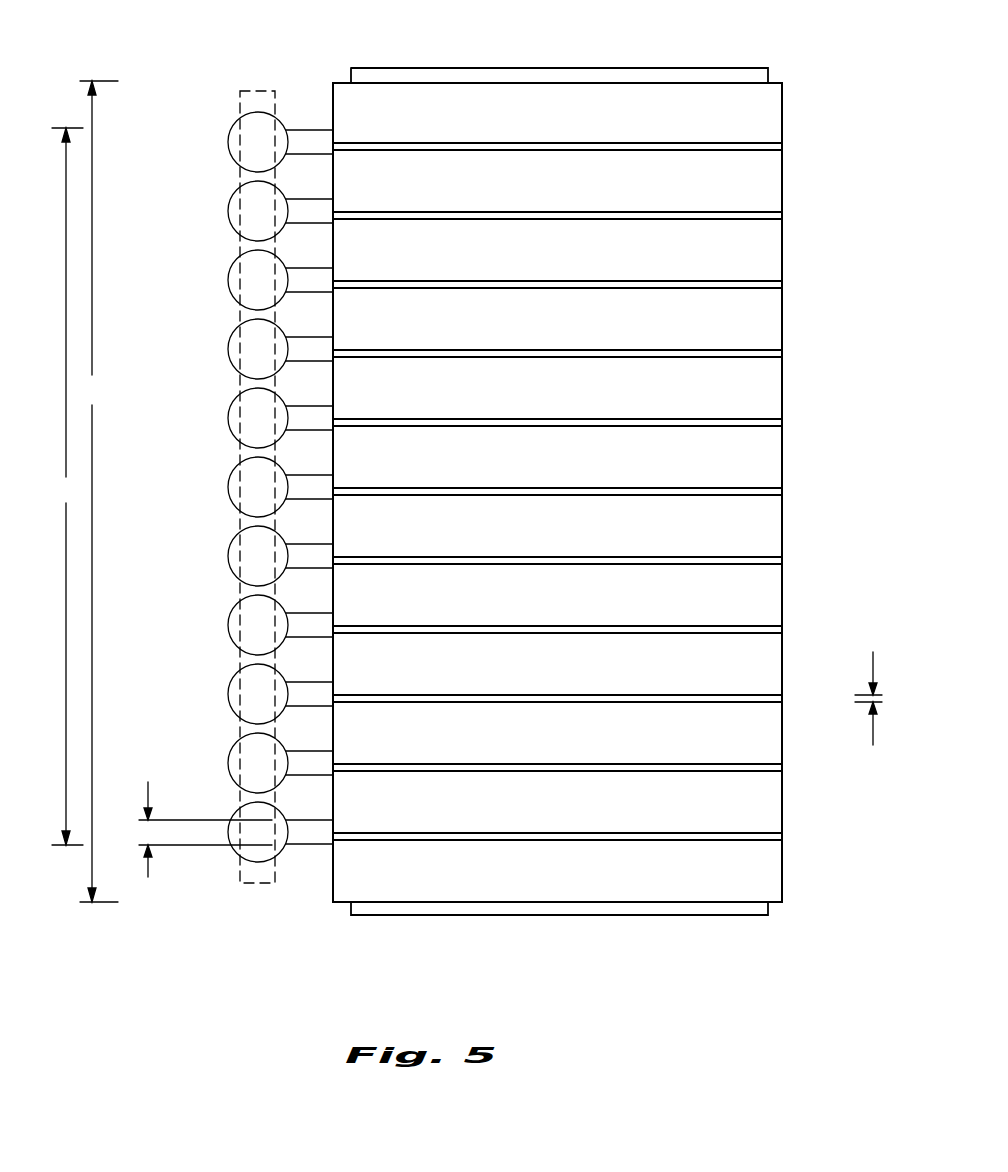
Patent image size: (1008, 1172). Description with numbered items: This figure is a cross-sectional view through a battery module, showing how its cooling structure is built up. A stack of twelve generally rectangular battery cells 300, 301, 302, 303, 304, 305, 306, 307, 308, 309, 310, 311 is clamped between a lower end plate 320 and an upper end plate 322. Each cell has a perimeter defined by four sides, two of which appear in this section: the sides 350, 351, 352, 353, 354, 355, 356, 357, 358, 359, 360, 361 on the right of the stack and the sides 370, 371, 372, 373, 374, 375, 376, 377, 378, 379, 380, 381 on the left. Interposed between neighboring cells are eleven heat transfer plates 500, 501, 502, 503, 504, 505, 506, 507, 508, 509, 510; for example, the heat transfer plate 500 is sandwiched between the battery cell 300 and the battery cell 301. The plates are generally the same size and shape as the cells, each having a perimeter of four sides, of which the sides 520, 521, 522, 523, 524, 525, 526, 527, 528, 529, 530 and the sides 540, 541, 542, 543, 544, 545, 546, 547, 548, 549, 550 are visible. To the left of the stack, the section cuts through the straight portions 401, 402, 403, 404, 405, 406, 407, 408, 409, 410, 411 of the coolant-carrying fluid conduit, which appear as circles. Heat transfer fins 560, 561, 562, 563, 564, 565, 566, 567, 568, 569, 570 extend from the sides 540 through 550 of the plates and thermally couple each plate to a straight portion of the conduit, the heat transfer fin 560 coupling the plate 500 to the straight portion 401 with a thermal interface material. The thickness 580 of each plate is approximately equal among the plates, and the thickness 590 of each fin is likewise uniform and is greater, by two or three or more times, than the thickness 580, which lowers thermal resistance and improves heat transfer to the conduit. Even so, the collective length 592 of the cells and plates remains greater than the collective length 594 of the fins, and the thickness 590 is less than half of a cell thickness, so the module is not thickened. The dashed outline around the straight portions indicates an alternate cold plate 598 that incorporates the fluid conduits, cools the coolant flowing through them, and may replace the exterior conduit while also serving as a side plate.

The battery cell 300 is at (772, 865).
The battery cell 301 is at (772, 796).
The battery cell 302 is at (772, 727).
The battery cell 303 is at (772, 658).
The battery cell 304 is at (772, 589).
The battery cell 305 is at (772, 520).
The battery cell 306 is at (772, 451).
The battery cell 307 is at (772, 382).
The battery cell 308 is at (772, 313).
The battery cell 309 is at (772, 244).
The battery cell 310 is at (772, 175).
The battery cell 311 is at (772, 108).
The end plate 320 is at (438, 915).
The end plate 322 is at (620, 68).
The side of battery cell 350 is at (783, 877).
The side of battery cell 351 is at (783, 808).
The side of battery cell 352 is at (783, 739).
The side of battery cell 353 is at (783, 670).
The side of battery cell 354 is at (783, 601).
The side of battery cell 355 is at (783, 532).
The side of battery cell 356 is at (783, 463).
The side of battery cell 357 is at (783, 394).
The side of battery cell 358 is at (783, 325).
The side of battery cell 359 is at (783, 256).
The side of battery cell 360 is at (783, 187).
The side of battery cell 361 is at (783, 120).
The side of battery cell 370 is at (333, 855).
The side of battery cell 371 is at (333, 786).
The side of battery cell 372 is at (333, 717).
The side of battery cell 373 is at (333, 648).
The side of battery cell 374 is at (333, 579).
The side of battery cell 375 is at (333, 510).
The side of battery cell 376 is at (333, 441).
The side of battery cell 377 is at (333, 372).
The side of battery cell 378 is at (333, 303).
The side of battery cell 379 is at (333, 234).
The side of battery cell 380 is at (333, 165).
The side of battery cell 381 is at (332, 98).
The straight portion of fluid conduit 401 is at (234, 852).
The straight portion of fluid conduit 402 is at (228, 763).
The straight portion of fluid conduit 403 is at (228, 694).
The straight portion of fluid conduit 404 is at (228, 625).
The straight portion of fluid conduit 405 is at (228, 556).
The straight portion of fluid conduit 406 is at (228, 487).
The straight portion of fluid conduit 407 is at (228, 418).
The straight portion of fluid conduit 408 is at (228, 349).
The straight portion of fluid conduit 409 is at (228, 280).
The straight portion of fluid conduit 410 is at (228, 211).
The straight portion of fluid conduit 411 is at (228, 142).
The heat transfer plate 500 is at (502, 830).
The heat transfer plate 501 is at (502, 761).
The heat transfer plate 502 is at (502, 692).
The heat transfer plate 503 is at (502, 623).
The heat transfer plate 504 is at (502, 554).
The heat transfer plate 505 is at (502, 485).
The heat transfer plate 506 is at (502, 416).
The heat transfer plate 507 is at (502, 347).
The heat transfer plate 508 is at (502, 278).
The heat transfer plate 509 is at (502, 209).
The heat transfer plate 510 is at (502, 142).
The side of heat transfer plate 520 is at (783, 838).
The side of heat transfer plate 521 is at (783, 769).
The side of heat transfer plate 522 is at (783, 700).
The side of heat transfer plate 523 is at (783, 631).
The side of heat transfer plate 524 is at (783, 562).
The side of heat transfer plate 525 is at (783, 493).
The side of heat transfer plate 526 is at (783, 424).
The side of heat transfer plate 527 is at (783, 355).
The side of heat transfer plate 528 is at (783, 286).
The side of heat transfer plate 529 is at (783, 217).
The side of heat transfer plate 530 is at (783, 148).
The side of heat transfer plate 540 is at (335, 836).
The side of heat transfer plate 541 is at (335, 767).
The side of heat transfer plate 542 is at (335, 698).
The side of heat transfer plate 543 is at (335, 629).
The side of heat transfer plate 544 is at (335, 560).
The side of heat transfer plate 545 is at (335, 491).
The side of heat transfer plate 546 is at (335, 422).
The side of heat transfer plate 547 is at (335, 353).
The side of heat transfer plate 548 is at (335, 284).
The side of heat transfer plate 549 is at (335, 215).
The side of heat transfer plate 550 is at (335, 146).
The heat transfer fin 560 is at (318, 828).
The heat transfer fin 561 is at (318, 759).
The heat transfer fin 562 is at (318, 690).
The heat transfer fin 563 is at (318, 621).
The heat transfer fin 564 is at (318, 552).
The heat transfer fin 565 is at (318, 483).
The heat transfer fin 566 is at (318, 414).
The heat transfer fin 567 is at (318, 345).
The heat transfer fin 568 is at (318, 276).
The heat transfer fin 569 is at (318, 207).
The heat transfer fin 570 is at (318, 138).
The thickness of heat transfer plate 580 is at (875, 687).
The thickness of heat transfer fin 590 is at (195, 817).
The collective length of battery cells and heat transfer plates 592 is at (82, 486).
The collective length of heat transfer fins 594 is at (81, 491).
The cold plate 598 is at (250, 884).